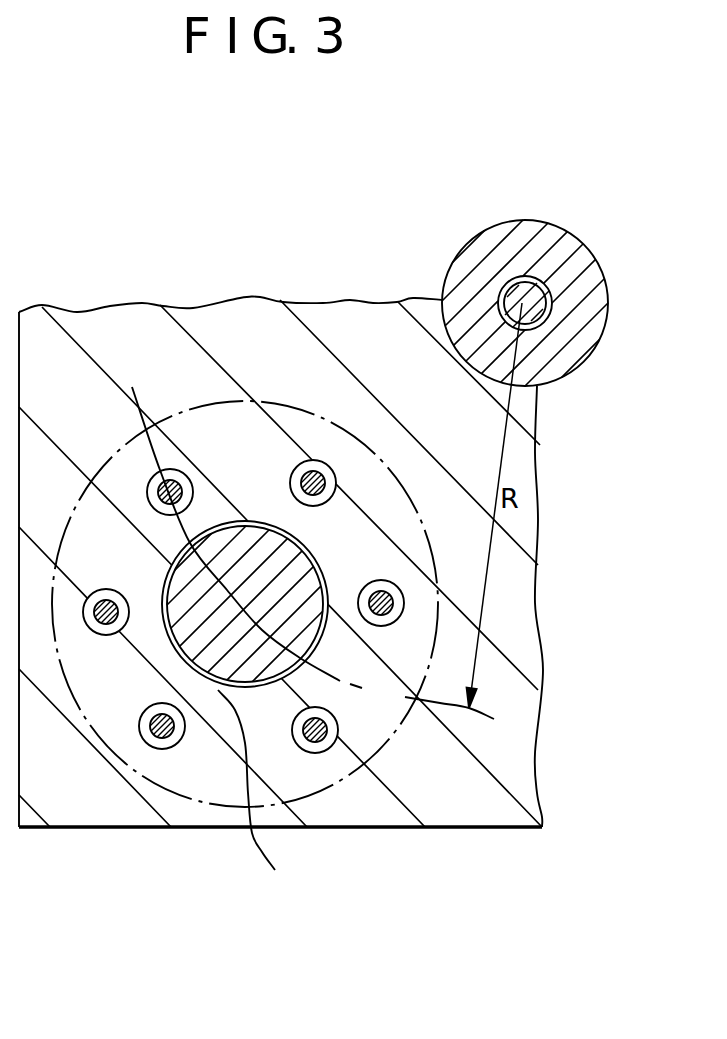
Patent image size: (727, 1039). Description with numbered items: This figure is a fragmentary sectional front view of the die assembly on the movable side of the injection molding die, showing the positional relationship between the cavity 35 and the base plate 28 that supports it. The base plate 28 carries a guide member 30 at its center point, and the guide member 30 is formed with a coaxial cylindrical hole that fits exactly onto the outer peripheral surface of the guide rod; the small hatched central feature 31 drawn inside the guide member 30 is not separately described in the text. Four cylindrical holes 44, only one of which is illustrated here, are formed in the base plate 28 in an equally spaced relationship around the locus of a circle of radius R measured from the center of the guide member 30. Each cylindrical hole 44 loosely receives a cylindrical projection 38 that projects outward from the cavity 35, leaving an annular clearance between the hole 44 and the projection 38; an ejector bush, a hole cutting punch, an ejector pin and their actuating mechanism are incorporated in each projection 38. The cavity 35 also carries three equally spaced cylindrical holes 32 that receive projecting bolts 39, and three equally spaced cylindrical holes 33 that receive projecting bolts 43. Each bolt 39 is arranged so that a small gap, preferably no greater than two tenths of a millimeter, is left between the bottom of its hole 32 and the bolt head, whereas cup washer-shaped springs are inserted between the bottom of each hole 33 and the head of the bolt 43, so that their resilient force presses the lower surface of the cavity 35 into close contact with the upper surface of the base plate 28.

The base plate 28 is at (517, 748).
The guide member 30 is at (580, 347).
The shaft center bore 31 is at (522, 276).
The cylindrical hole 32 is at (297, 468).
The cylindrical hole 33 is at (160, 472).
The cavity 35 is at (332, 418).
The cylindrical projection 38 is at (287, 597).
The projecting bolt 39 is at (336, 483).
The projecting bolt 43 is at (148, 489).
The cylindrical hole 44 is at (266, 800).